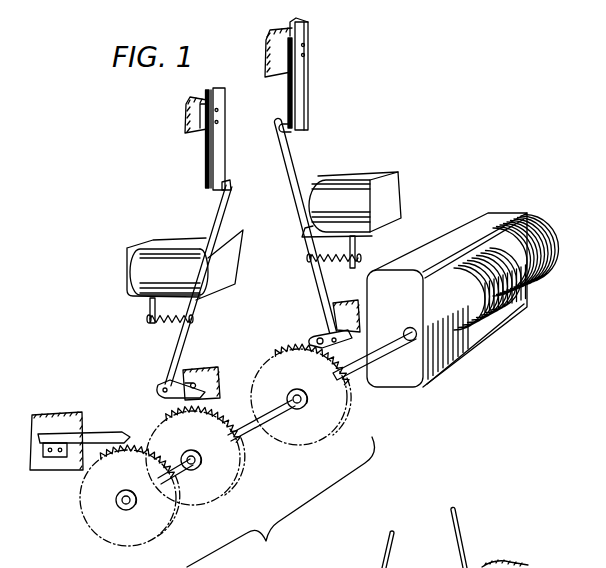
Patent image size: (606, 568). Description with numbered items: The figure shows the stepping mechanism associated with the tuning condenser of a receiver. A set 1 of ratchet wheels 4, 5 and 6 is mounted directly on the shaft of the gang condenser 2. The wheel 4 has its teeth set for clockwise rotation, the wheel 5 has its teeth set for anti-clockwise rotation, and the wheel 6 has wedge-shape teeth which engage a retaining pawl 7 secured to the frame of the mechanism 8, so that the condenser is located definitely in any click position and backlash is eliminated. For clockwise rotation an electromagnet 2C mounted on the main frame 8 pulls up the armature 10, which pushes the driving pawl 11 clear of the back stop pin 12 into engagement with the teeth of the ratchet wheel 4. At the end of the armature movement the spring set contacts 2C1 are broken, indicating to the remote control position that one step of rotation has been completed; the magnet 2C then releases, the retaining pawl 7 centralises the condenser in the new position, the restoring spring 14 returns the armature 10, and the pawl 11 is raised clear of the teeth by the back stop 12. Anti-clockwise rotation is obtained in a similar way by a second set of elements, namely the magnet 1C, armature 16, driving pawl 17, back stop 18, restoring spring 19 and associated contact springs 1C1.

The set of ratchet wheels 1 is at (280, 502).
The gang condenser shaft 2 is at (350, 373).
The ratchet wheel 4 is at (210, 505).
The ratchet wheel 5 is at (318, 447).
The ratchet wheel 6 is at (130, 537).
The retaining pawl 7 is at (117, 435).
The mechanism main frame 8 is at (204, 368).
The armature 10 is at (230, 265).
The driving pawl 11 is at (163, 388).
The back stop pin 12 is at (173, 400).
The restoring spring 14 is at (172, 323).
The armature 16 is at (318, 181).
The driving pawl 17 is at (330, 332).
The back stop 18 is at (324, 343).
The restoring spring 19 is at (329, 263).
The magnet 1C is at (347, 188).
The electromagnet 2C is at (165, 258).
The contact springs 1C1 is at (308, 83).
The spring set contacts 2C1 is at (205, 162).